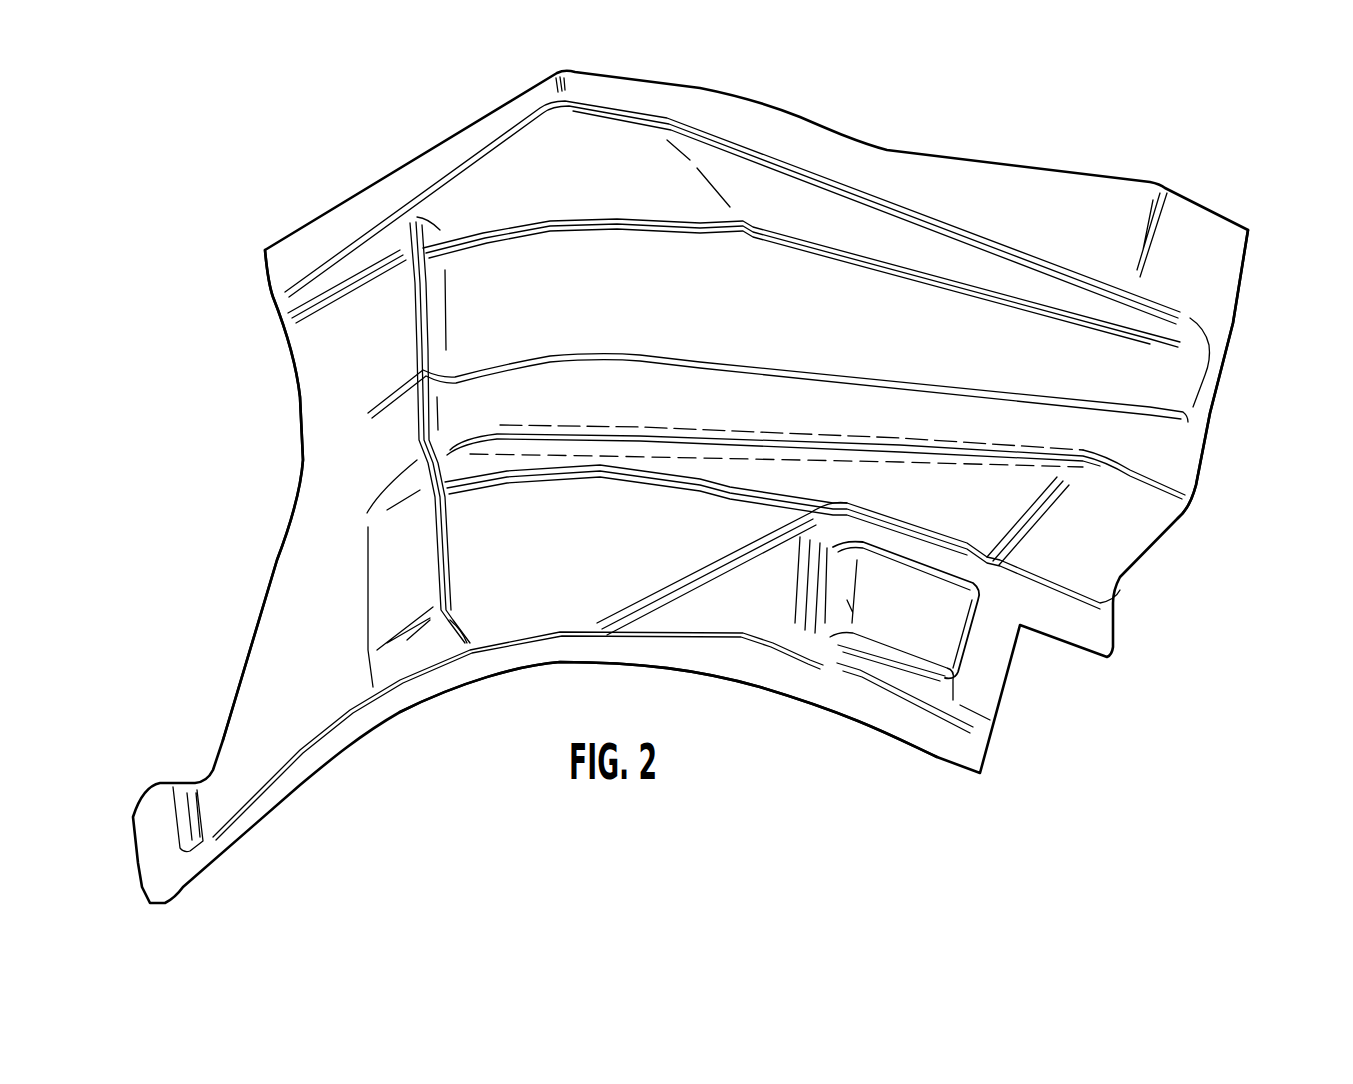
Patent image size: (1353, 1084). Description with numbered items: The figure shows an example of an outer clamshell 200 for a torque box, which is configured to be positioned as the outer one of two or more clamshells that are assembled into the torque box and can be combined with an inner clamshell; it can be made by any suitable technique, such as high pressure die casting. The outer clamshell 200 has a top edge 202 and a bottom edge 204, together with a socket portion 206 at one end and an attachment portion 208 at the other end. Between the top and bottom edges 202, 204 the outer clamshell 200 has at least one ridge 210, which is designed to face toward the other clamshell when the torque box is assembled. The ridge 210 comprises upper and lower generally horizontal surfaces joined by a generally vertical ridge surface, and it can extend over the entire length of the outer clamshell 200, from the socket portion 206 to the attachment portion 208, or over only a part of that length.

The outer clamshell 200 is at (1141, 694).
The top edge 202 is at (780, 112).
The bottom edge 204 is at (697, 667).
The socket portion 206 is at (266, 580).
The attachment portion 208 is at (1235, 325).
The ridge 210 is at (620, 392).